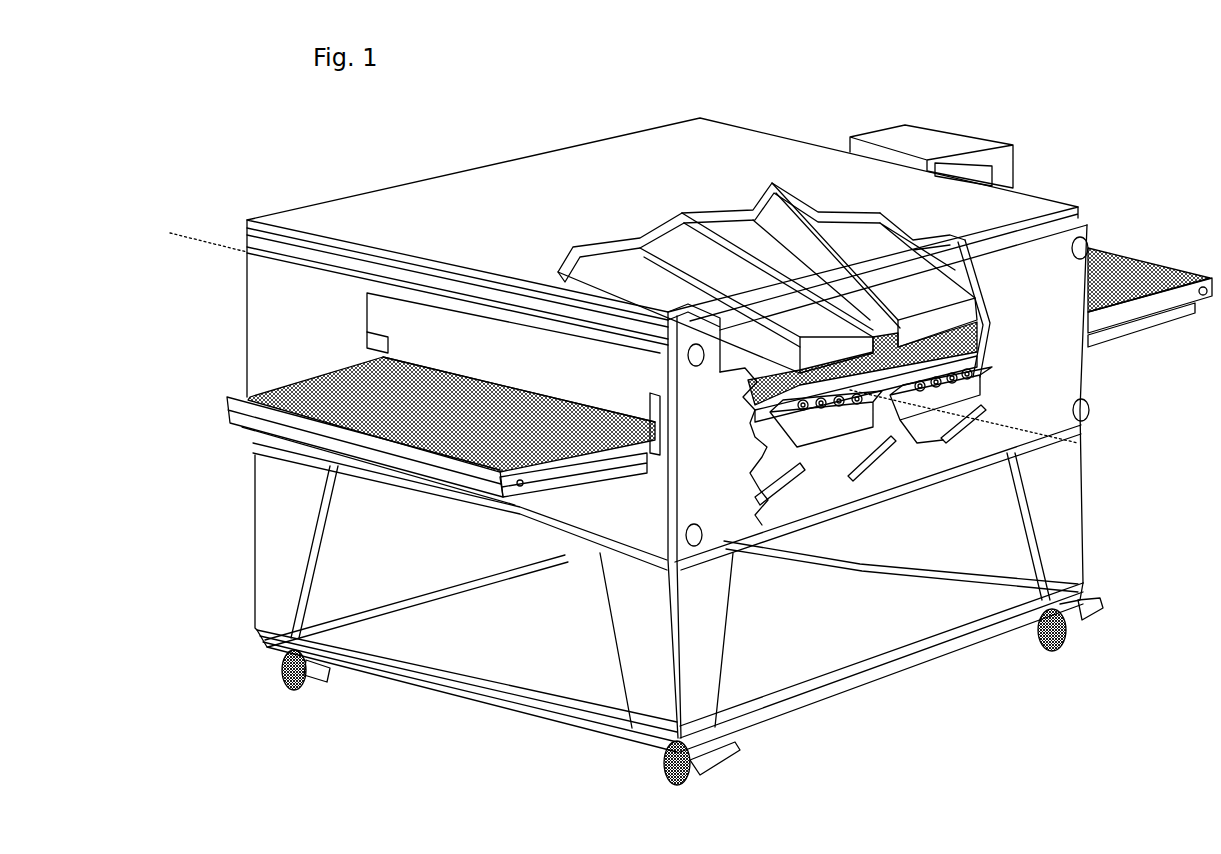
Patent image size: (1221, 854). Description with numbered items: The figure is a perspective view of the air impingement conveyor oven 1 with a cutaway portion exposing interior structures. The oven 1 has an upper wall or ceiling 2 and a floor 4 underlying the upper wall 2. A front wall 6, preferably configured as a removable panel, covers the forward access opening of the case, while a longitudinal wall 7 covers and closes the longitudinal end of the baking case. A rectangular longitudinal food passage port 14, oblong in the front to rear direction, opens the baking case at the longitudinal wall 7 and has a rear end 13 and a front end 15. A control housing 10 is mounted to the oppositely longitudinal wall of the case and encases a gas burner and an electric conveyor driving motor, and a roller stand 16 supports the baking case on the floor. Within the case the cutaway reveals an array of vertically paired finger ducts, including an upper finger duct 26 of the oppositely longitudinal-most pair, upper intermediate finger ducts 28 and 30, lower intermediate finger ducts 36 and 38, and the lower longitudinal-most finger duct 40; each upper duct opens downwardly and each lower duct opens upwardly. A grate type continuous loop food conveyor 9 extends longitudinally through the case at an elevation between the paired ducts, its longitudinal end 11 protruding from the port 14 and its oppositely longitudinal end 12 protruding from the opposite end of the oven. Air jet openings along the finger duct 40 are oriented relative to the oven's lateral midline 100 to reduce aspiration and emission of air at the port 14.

The air impingement conveyor oven 1 is at (775, 106).
The upper wall 2 is at (553, 178).
The floor 4 is at (865, 422).
The front wall 6 is at (1058, 323).
The longitudinal wall 7 is at (303, 298).
The food conveyor 9 is at (340, 403).
The control housing 10 is at (912, 137).
The longitudinal end of the food conveyor 11 is at (417, 460).
The oppositely longitudinal end of the food conveyor 12 is at (1130, 263).
The rear end of the food passage port 13 is at (403, 360).
The longitudinal food passage port 14 is at (527, 387).
The front end of the food passage port 15 is at (600, 430).
The roller stand 16 is at (1067, 540).
The finger duct 26 is at (930, 275).
The finger duct 28 is at (803, 255).
The finger duct 30 is at (686, 278).
The finger duct 36 is at (947, 395).
The finger duct 38 is at (868, 424).
The finger duct 40 is at (868, 453).
The lateral midline 100 is at (216, 240).